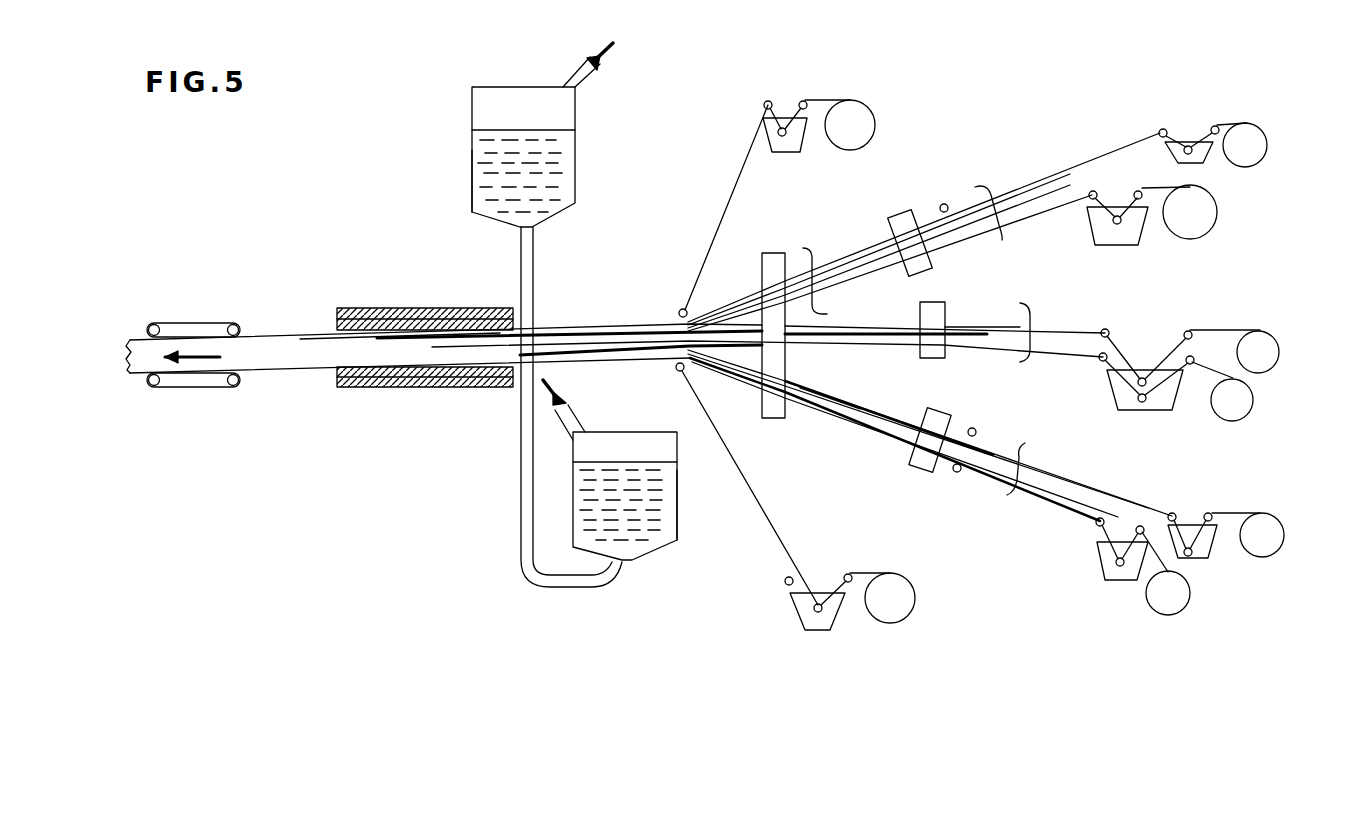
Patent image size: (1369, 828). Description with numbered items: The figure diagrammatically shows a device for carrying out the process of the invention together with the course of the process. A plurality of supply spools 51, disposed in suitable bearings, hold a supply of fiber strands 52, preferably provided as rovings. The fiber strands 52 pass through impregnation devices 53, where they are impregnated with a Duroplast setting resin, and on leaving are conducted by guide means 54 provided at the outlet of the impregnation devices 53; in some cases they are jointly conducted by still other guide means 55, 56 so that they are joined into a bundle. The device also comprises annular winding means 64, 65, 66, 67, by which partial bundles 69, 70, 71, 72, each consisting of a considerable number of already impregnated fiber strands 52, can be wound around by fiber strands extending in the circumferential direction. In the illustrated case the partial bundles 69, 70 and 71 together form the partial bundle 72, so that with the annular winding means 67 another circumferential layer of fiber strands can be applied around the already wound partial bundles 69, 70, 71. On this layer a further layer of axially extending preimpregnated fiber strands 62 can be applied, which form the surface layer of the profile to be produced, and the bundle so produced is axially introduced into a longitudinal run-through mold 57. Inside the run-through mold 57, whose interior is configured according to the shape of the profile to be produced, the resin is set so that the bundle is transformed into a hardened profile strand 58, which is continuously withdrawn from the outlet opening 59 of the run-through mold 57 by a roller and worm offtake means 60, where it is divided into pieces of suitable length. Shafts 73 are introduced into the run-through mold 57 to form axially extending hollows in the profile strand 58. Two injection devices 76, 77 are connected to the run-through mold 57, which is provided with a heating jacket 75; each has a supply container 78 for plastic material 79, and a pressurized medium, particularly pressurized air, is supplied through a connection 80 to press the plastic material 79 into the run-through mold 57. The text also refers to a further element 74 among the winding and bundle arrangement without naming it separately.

The supply spool 51 is at (1250, 153).
The fiber strand 52 is at (1223, 125).
The impregnation device 53 is at (1200, 160).
The guide means 54 is at (1163, 128).
The guide means 55 is at (945, 204).
The guide means 56 is at (680, 310).
The run-through mold 57 is at (420, 387).
The profile strand 58 is at (303, 362).
The outlet opening 59 is at (332, 328).
The roller and worm offtake means 60 is at (213, 323).
The axially extending preimpregnated fiber strands 62 is at (733, 182).
The annular winding means 64 is at (903, 227).
The annular winding means 65 is at (932, 310).
The annular winding means 66 is at (922, 457).
The annular winding means 67 is at (775, 418).
The partial bundle 69 is at (997, 195).
The partial bundle 70 is at (1048, 327).
The partial bundle 71 is at (1046, 455).
The partial bundle 72 is at (827, 313).
The shaft 73 is at (978, 328).
The yarn bundle 74 is at (868, 415).
The heating jacket 75 is at (377, 387).
The injection device 76 is at (472, 162).
The injection device 77 is at (682, 600).
The supply container 78 is at (472, 210).
The plastic material 79 is at (493, 198).
The connection 80 is at (577, 85).